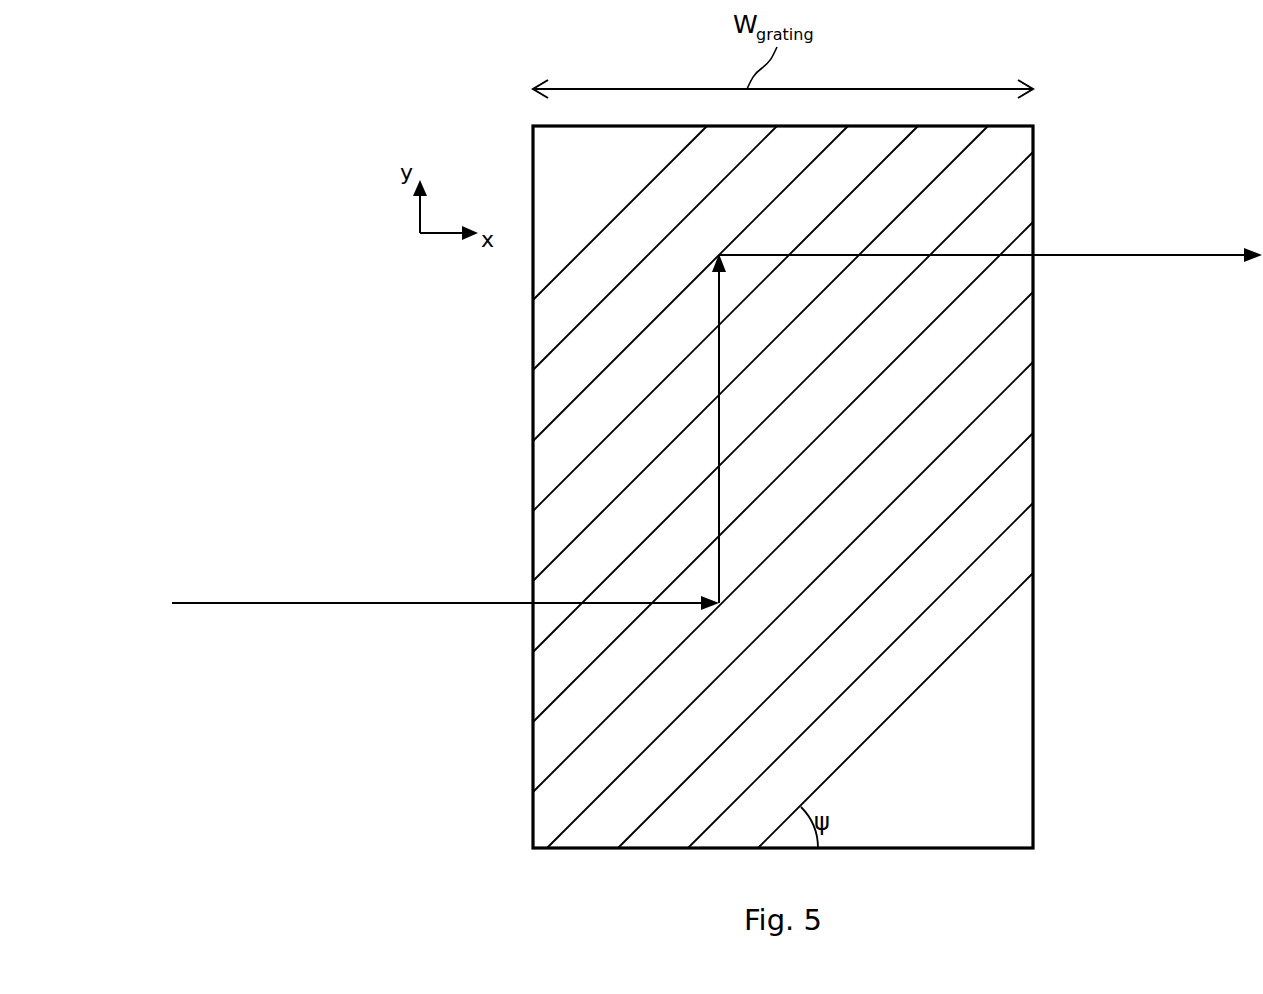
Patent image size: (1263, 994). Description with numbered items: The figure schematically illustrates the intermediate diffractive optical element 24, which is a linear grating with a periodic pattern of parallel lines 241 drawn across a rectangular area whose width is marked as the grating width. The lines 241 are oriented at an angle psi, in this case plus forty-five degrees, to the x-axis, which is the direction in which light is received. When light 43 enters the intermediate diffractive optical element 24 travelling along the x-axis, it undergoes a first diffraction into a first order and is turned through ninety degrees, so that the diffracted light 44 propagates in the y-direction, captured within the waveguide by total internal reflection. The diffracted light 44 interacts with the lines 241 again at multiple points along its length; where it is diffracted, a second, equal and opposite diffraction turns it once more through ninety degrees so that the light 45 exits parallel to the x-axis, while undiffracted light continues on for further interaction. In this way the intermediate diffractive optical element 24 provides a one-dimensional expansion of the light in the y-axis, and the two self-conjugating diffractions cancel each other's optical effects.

The intermediate diffractive optical element 24 is at (987, 817).
The parallel lines 241 is at (610, 296).
The light 43 is at (378, 601).
The diffracted light 44 is at (710, 376).
The light 45 is at (1097, 267).